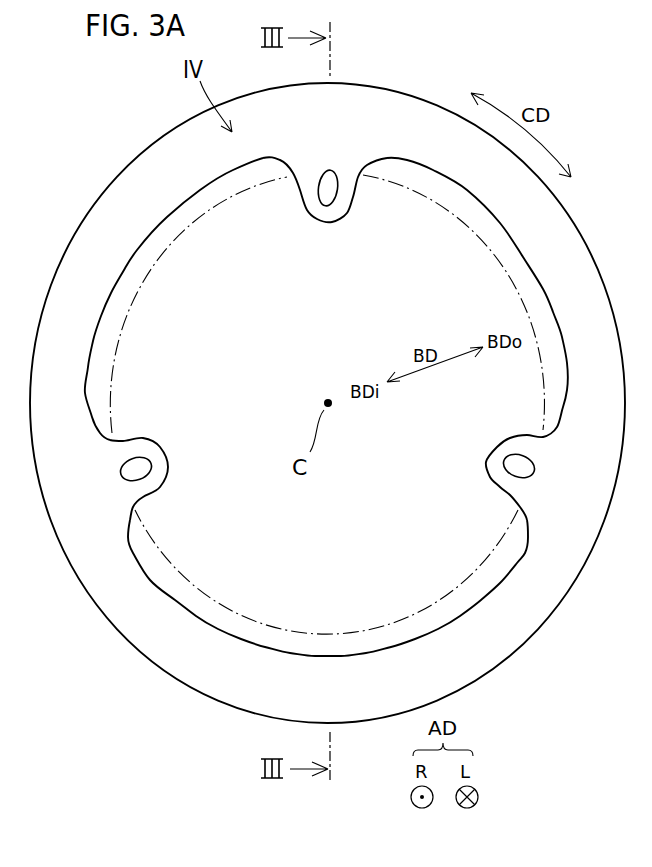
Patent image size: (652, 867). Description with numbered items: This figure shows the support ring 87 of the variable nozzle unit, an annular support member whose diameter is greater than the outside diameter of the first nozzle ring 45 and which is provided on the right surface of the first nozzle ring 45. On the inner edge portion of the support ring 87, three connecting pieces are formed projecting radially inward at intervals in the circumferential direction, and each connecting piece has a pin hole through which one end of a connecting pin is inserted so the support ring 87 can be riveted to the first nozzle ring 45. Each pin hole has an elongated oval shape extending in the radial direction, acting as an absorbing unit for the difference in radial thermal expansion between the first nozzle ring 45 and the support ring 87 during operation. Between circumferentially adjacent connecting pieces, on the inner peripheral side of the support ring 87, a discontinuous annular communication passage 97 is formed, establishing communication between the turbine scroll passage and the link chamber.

The support ring 87 is at (384, 55).
The first nozzle ring 45 is at (138, 295).
The communication passage 97 is at (187, 212).